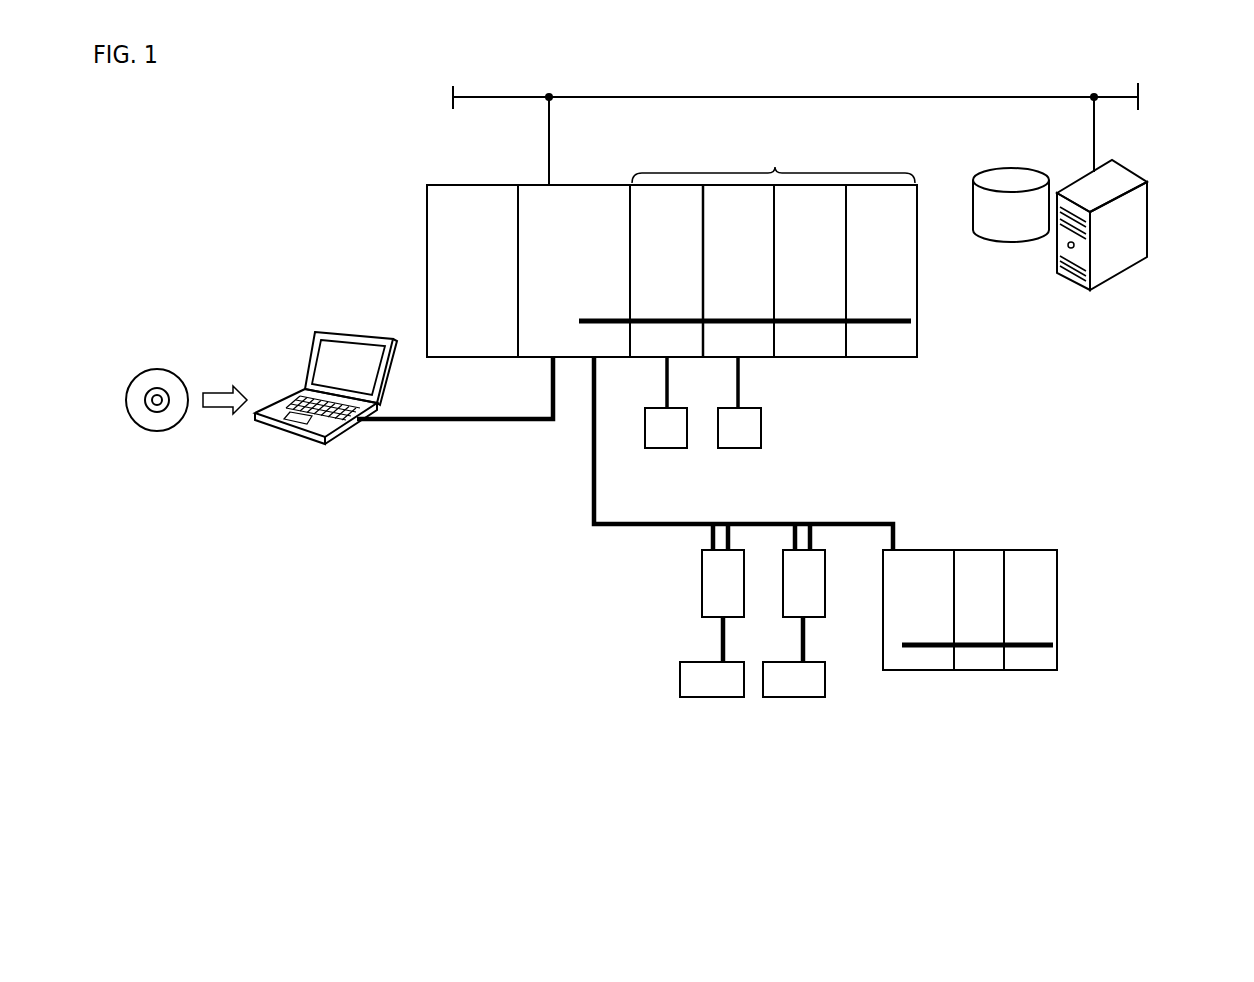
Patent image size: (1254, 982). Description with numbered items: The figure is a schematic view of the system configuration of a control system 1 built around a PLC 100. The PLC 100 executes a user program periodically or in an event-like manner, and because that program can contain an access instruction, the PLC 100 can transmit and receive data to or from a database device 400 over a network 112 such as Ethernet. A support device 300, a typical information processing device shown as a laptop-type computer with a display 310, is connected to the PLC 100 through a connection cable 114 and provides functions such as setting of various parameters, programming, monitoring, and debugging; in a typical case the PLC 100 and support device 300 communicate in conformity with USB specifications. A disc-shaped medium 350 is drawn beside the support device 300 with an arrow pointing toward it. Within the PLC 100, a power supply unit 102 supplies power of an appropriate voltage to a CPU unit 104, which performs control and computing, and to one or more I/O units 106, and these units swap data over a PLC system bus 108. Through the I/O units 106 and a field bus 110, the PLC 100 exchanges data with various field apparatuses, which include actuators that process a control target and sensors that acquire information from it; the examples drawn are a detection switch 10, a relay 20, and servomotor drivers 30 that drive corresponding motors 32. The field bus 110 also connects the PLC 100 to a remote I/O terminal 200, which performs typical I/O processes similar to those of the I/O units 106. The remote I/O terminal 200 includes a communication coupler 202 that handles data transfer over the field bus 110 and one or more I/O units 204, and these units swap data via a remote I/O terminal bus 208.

The control system 1 is at (1184, 103).
The detection switch 10 is at (667, 448).
The relay 20 is at (738, 448).
The servomotor driver 30 is at (702, 583).
The motor 32 is at (680, 678).
The PLC 100 is at (656, 246).
The power supply unit 102 is at (472, 185).
The CPU unit 104 is at (596, 185).
The I/O unit 106 is at (775, 171).
The PLC system bus 108 is at (888, 321).
The field bus 110 is at (594, 503).
The network 112 is at (787, 97).
The connection cable 114 is at (458, 424).
The remote I/O terminal 200 is at (992, 597).
The communication coupler 202 is at (920, 548).
The I/O unit 204 is at (976, 548).
The remote I/O terminal bus 208 is at (982, 650).
The support device 300 is at (324, 425).
The display 310 is at (330, 354).
The recording medium 350 is at (159, 431).
The database device 400 is at (1177, 252).